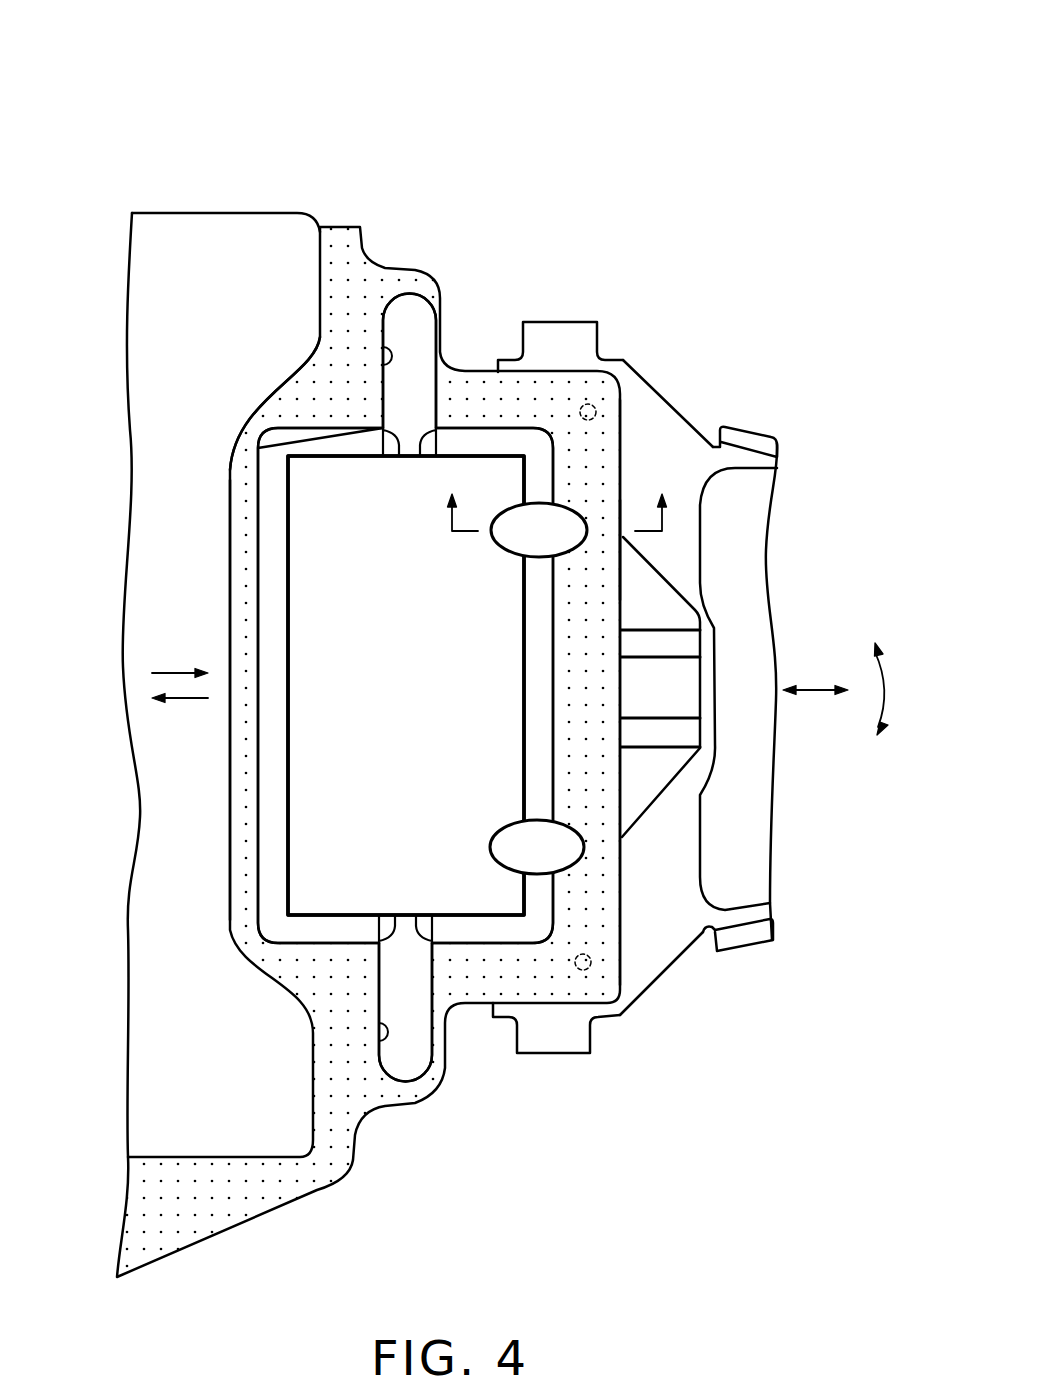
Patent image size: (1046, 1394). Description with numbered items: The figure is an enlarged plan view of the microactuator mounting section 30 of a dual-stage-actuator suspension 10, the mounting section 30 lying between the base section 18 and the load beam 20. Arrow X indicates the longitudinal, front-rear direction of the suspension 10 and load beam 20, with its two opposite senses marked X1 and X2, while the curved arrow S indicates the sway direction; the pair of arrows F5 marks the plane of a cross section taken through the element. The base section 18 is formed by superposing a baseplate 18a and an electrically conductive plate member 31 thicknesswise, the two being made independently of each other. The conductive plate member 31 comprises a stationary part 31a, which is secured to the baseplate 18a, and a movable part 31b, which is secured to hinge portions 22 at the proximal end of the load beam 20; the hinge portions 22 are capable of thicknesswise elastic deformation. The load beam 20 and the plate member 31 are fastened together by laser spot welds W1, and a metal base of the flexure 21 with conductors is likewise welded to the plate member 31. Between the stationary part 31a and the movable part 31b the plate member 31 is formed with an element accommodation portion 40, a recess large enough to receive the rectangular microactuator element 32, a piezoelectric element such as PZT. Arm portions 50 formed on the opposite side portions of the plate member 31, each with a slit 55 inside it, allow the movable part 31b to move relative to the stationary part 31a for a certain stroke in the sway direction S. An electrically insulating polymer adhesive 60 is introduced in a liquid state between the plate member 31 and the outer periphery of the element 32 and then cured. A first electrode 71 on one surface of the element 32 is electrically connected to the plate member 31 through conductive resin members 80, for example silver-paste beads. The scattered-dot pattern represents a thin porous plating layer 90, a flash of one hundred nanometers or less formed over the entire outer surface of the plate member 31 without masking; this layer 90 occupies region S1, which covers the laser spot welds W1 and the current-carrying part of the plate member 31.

The suspension 10 is at (703, 1103).
The base section 18 is at (152, 207).
The baseplate 18a is at (163, 360).
The load beam 20 is at (767, 430).
The flexure 21 is at (665, 628).
The hinge portions 22 is at (661, 450).
The microactuator mounting section 30 is at (500, 95).
The conductive plate member 31 is at (345, 245).
The stationary part 31a is at (243, 578).
The movable part 31b is at (603, 695).
The microactuator element 32 is at (312, 842).
The element accommodation portion 40 is at (250, 475).
The arm portions 50 is at (421, 290).
The slits 55 is at (385, 357).
The adhesive 60 is at (275, 543).
The first electrode 71 is at (406, 685).
The conductive resin members 80 is at (527, 537).
The thin porous plating layer 90 is at (600, 557).
The region S1 is at (557, 403).
The laser spot welds W1 is at (593, 405).
The force direction F5 is at (559, 497).
The arrow X is at (816, 686).
The X1 direction X1 is at (175, 670).
The X2 direction X2 is at (190, 703).
The arrow S is at (872, 688).